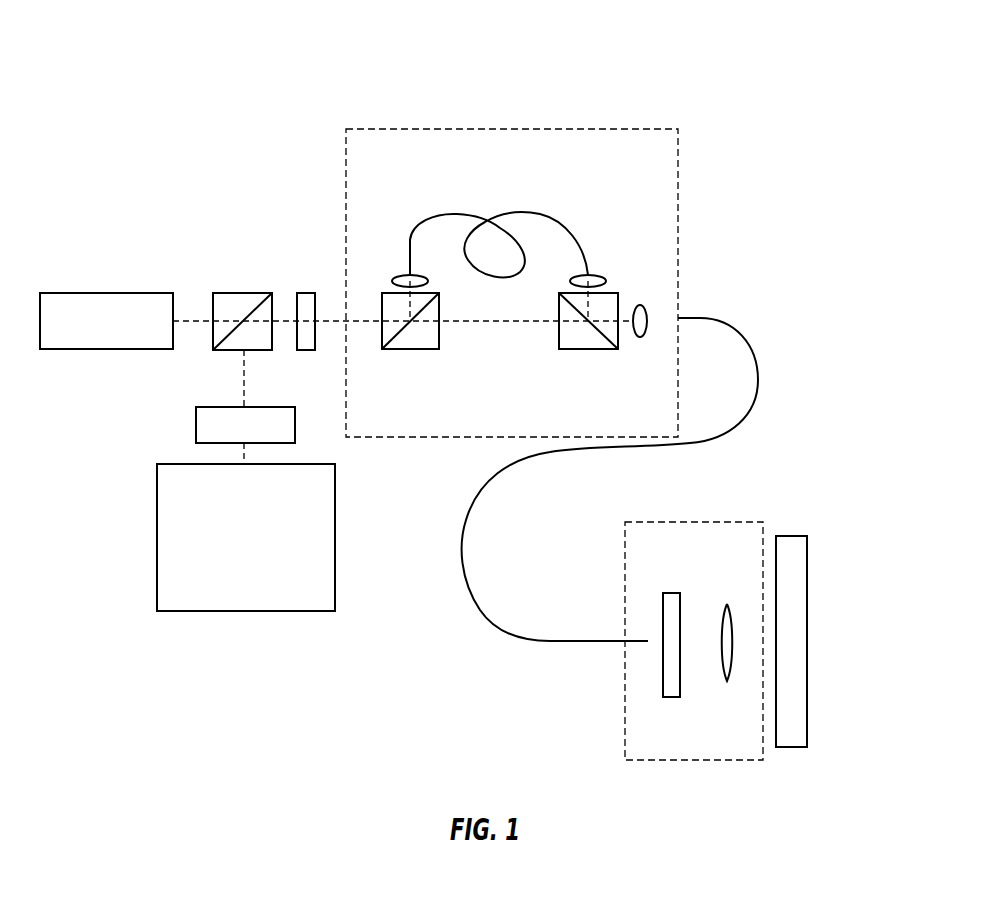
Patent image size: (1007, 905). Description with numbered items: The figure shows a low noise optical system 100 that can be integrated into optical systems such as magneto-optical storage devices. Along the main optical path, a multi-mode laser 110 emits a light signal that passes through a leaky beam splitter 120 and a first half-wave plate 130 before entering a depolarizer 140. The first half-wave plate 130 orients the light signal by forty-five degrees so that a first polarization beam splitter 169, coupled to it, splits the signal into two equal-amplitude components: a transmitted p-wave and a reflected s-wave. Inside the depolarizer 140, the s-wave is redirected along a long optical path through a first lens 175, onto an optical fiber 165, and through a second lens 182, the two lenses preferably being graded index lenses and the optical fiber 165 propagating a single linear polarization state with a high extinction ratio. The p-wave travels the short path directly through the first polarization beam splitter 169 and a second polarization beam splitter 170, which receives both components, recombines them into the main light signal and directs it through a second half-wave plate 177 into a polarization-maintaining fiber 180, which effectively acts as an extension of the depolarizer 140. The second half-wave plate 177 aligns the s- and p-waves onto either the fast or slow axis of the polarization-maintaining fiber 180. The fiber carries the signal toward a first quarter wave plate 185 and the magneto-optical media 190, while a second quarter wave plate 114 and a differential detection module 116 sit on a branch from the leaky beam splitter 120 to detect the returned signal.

The low noise optical system 100 is at (263, 74).
The multi-mode laser 110 is at (107, 293).
The second quarter wave plate 114 is at (196, 432).
The differential detection module 116 is at (157, 575).
The leaky beam splitter 120 is at (237, 350).
The first half-wave plate 130 is at (310, 350).
The depolarizer 140 is at (678, 210).
The optical fiber 165 is at (513, 213).
The first polarization beam splitter 169 is at (410, 349).
The second polarization beam splitter 170 is at (588, 349).
The first lens 175 is at (403, 275).
The second half-wave plate 177 is at (647, 305).
The polarization-maintaining fiber 180 is at (463, 537).
The second lens 182 is at (595, 275).
The first quarter wave plate 185 is at (625, 708).
The magneto-optical media 190 is at (807, 625).